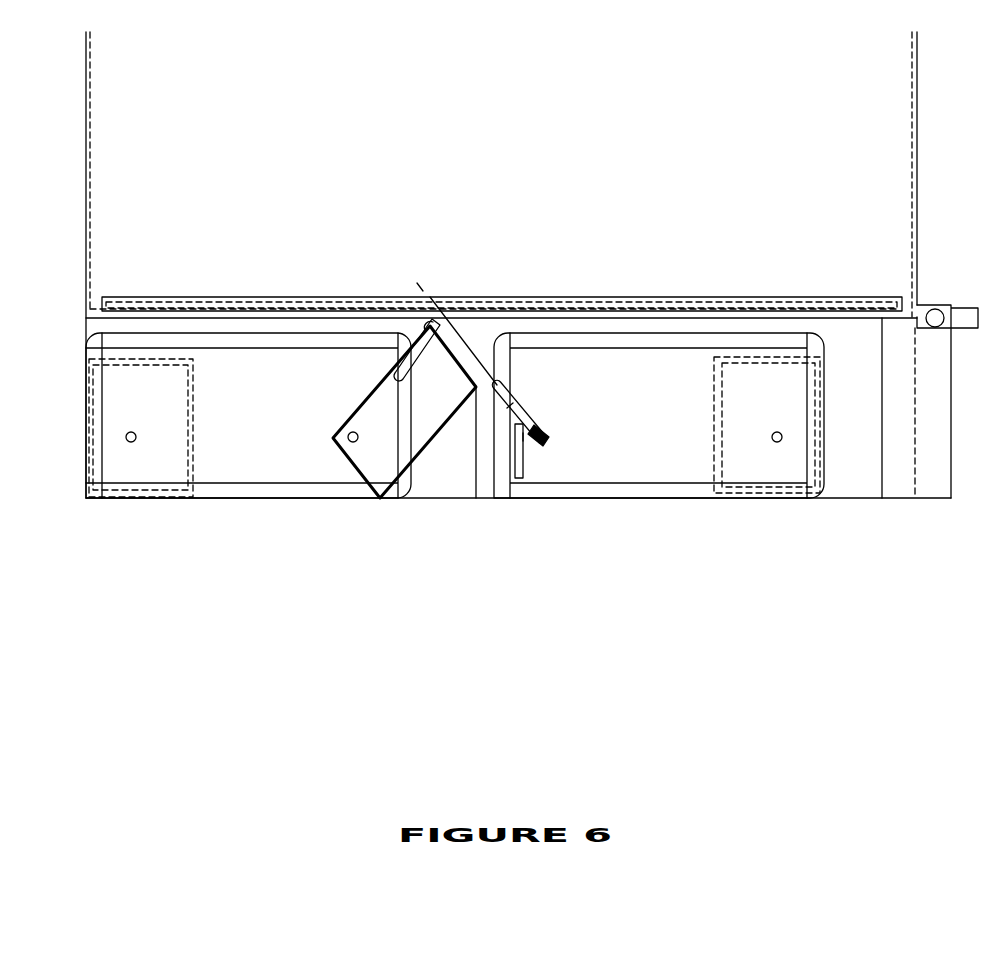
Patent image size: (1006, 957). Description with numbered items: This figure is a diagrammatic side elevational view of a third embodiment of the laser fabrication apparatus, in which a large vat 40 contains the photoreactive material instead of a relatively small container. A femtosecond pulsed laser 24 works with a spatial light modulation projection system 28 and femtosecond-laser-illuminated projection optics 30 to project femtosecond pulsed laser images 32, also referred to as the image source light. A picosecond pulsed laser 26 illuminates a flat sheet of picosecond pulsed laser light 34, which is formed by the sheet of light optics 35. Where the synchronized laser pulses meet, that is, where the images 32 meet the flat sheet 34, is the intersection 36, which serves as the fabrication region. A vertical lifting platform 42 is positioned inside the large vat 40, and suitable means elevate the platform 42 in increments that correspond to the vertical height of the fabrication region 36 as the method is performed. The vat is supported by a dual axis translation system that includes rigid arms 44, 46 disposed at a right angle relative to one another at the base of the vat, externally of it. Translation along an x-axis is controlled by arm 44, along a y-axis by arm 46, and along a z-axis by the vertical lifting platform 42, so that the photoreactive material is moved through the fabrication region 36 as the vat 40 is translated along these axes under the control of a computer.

The femtosecond pulsed laser 24 is at (251, 377).
The picosecond pulsed laser 26 is at (668, 377).
The spatial light modulation (SLM) projection system 28 is at (435, 407).
The projection optics 30 is at (443, 322).
The femtosecond pulsed laser images 32 is at (430, 323).
The flat sheet of picosecond pulsed laser light 34 is at (473, 352).
The sheet of light optics 35 is at (522, 437).
The intersection (fabrication region) 36 is at (430, 297).
The large vat 40 is at (916, 92).
The vertical lifting platform 42 is at (187, 303).
The rigid arm 44 is at (838, 478).
The rigid arm 46 is at (898, 470).